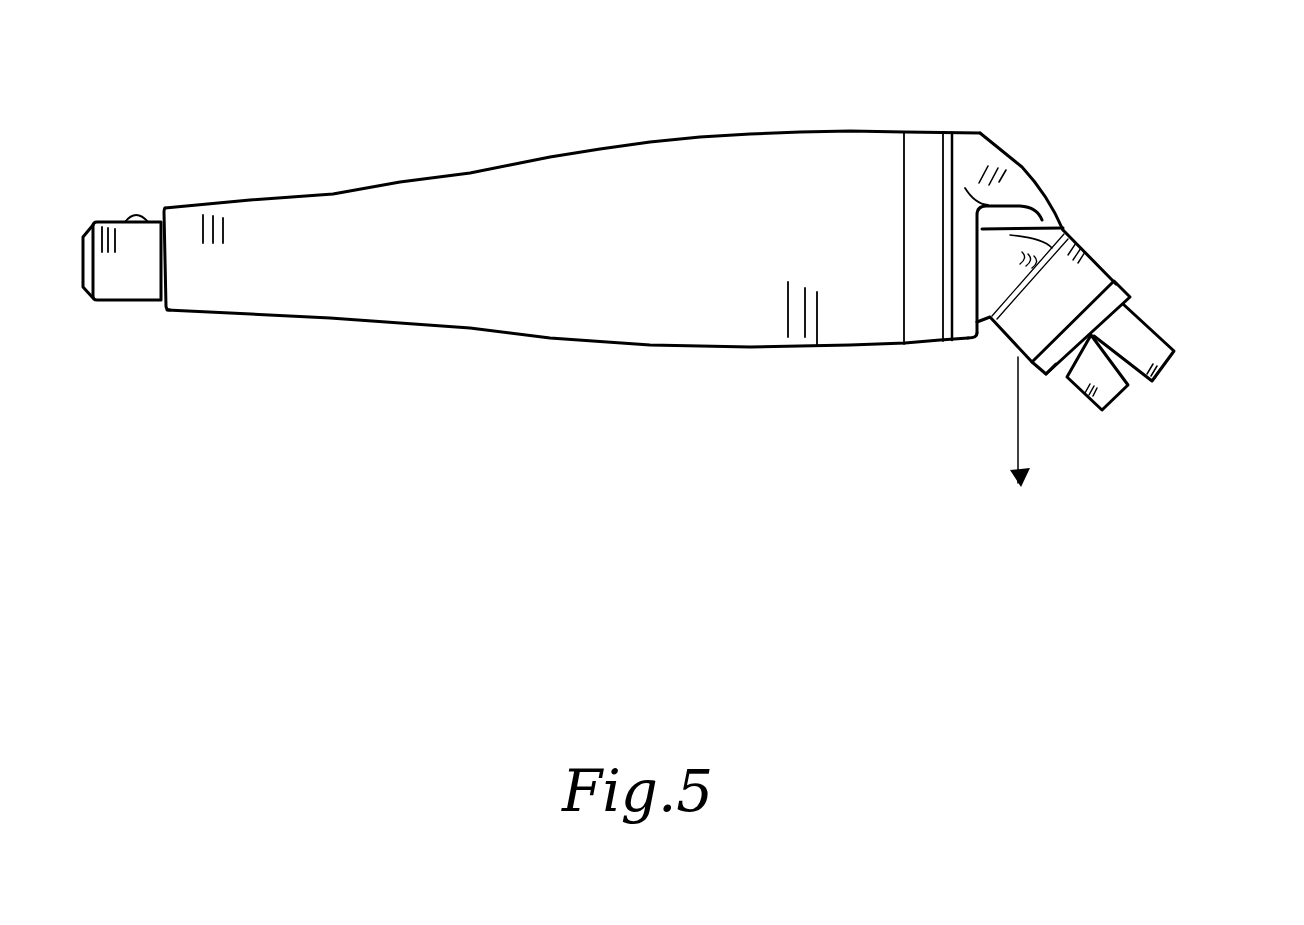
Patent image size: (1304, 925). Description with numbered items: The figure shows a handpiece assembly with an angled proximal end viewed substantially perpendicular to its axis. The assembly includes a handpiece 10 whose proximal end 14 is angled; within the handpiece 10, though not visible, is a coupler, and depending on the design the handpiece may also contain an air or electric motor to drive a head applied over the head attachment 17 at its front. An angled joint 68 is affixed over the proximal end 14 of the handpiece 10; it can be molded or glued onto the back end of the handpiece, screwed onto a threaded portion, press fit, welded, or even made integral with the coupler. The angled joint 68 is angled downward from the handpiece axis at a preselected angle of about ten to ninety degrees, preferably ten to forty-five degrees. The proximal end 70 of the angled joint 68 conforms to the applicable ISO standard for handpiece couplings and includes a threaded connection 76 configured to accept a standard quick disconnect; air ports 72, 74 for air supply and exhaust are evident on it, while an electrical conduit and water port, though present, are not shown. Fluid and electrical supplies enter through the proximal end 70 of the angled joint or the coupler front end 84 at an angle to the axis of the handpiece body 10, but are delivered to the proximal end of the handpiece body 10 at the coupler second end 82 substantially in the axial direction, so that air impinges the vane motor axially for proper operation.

The handpiece 10 is at (337, 202).
The head attachment 17 is at (118, 226).
The proximal end 14 is at (942, 169).
The coupler second end 82 is at (957, 155).
The angled joint 68 is at (1020, 168).
The threaded connection 76 is at (1117, 282).
The proximal end of the angled joint 70 is at (1177, 335).
The air port 72 is at (1175, 354).
The air port 74 is at (1090, 410).
The coupler front end 84 is at (1066, 378).